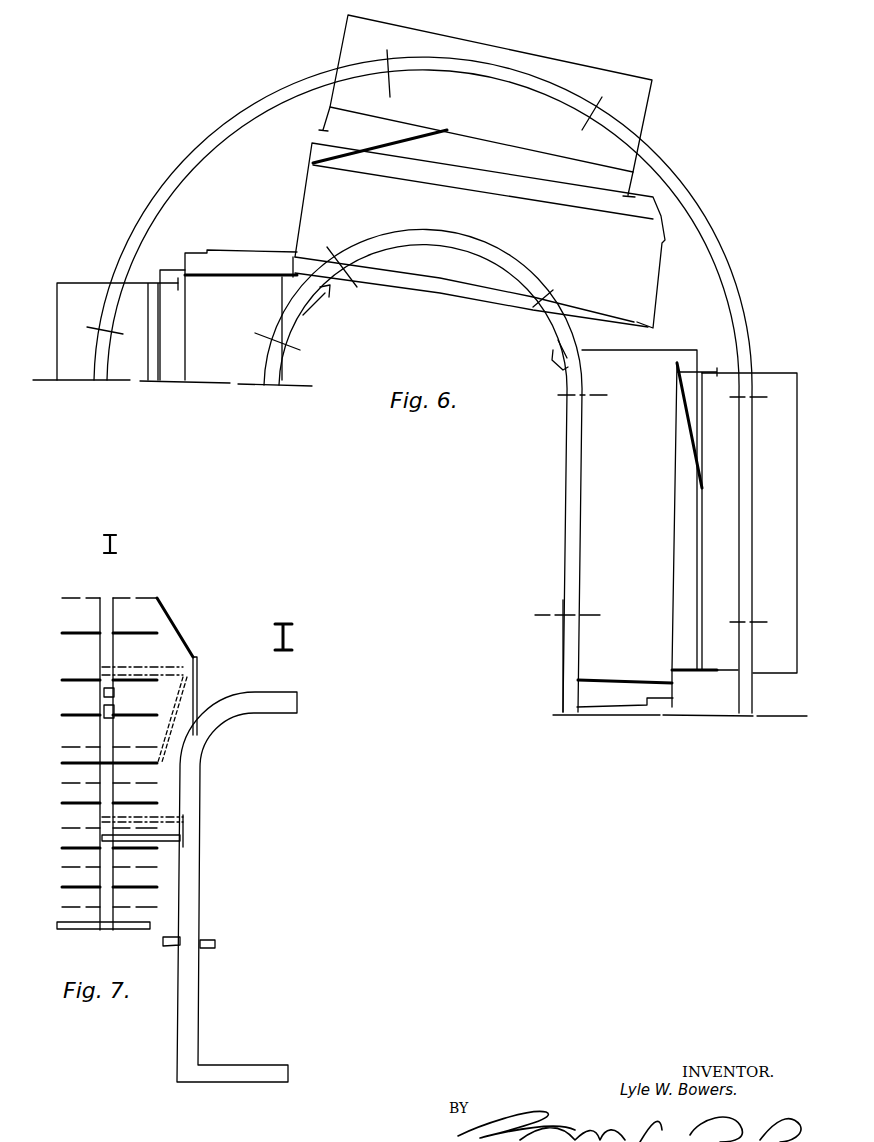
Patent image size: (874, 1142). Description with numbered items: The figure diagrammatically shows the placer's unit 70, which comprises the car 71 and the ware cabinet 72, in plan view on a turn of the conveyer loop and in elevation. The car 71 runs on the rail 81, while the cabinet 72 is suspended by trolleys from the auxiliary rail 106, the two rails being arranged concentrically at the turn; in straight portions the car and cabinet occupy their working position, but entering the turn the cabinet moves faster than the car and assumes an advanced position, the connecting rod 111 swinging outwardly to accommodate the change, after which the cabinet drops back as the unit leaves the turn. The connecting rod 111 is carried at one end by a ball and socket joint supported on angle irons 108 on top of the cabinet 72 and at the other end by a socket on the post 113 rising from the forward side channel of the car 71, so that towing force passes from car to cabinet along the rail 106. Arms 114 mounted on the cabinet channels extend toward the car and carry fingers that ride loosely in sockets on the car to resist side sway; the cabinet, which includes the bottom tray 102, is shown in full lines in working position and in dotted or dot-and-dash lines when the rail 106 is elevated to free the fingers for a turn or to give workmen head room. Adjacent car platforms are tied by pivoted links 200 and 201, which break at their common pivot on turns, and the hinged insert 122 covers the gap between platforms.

In FIG. 6, the placer's unit 70 is at (606, 360).
In FIG. 6, the car 71 is at (440, 278).
In FIG. 7, the car 71 is at (205, 840).
In FIG. 6, the cabinet 72 is at (645, 113).
In FIG. 7, the cabinet 72 is at (100, 605).
In FIG. 6, the rail 81 is at (568, 566).
In FIG. 7, the rail 81 is at (295, 637).
In FIG. 7, the tray 102 is at (58, 758).
In FIG. 6, the auxiliary rail 106 is at (750, 331).
In FIG. 7, the auxiliary rail 106 is at (118, 546).
In FIG. 7, the angle iron 108 is at (116, 713).
In FIG. 6, the connecting rod 111 is at (400, 138).
In FIG. 7, the connecting rod 111 is at (172, 630).
In FIG. 7, the post 113 is at (198, 692).
In FIG. 6, the arms 114 is at (323, 121).
In FIG. 7, the arms 114 is at (128, 672).
In FIG. 6, the insert 122 is at (226, 257).
In FIG. 6, the link 200 is at (311, 306).
In FIG. 6, the link 201 is at (328, 289).